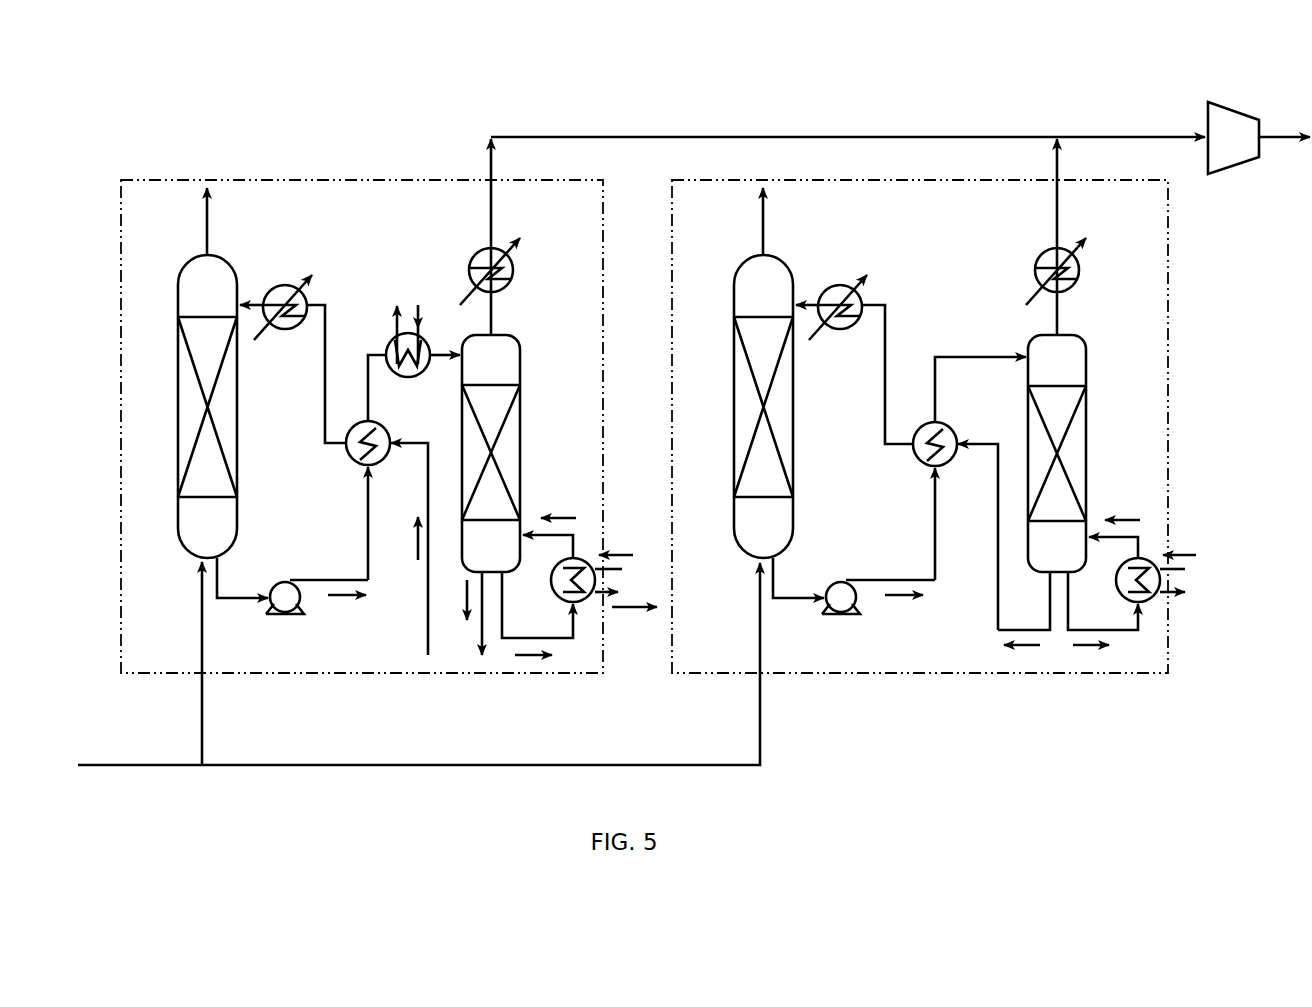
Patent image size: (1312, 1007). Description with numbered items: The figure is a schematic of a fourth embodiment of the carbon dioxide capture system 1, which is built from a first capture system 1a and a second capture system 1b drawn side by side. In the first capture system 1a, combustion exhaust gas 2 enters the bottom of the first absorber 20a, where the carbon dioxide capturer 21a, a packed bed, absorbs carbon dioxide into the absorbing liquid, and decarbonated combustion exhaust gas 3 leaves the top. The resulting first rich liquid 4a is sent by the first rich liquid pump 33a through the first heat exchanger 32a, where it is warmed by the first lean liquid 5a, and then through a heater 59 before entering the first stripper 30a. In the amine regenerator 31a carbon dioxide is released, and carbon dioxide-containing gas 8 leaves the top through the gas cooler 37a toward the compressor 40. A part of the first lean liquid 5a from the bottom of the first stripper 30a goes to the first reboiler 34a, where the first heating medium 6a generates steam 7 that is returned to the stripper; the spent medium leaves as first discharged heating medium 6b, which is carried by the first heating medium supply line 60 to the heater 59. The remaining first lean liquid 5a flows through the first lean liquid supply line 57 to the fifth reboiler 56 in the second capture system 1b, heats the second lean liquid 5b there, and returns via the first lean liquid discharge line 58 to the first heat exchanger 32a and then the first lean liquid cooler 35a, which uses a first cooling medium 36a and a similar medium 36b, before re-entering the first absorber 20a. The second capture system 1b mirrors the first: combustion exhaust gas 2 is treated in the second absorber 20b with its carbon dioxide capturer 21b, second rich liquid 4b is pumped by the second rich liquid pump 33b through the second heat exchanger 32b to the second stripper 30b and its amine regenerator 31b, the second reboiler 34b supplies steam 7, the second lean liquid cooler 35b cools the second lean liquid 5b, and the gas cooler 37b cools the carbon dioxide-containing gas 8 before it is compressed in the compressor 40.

The carbon dioxide capture system 1 is at (92, 131).
The first capture system 1a is at (117, 476).
The second capture system 1b is at (1172, 322).
The combustion exhaust gas 2 is at (150, 748).
The decarbonated combustion exhaust gas 3 is at (188, 208).
The first rich liquid 4a is at (346, 604).
The second rich liquid 4b is at (900, 604).
The first lean liquid 5a is at (416, 543).
The second lean liquid 5b is at (1025, 648).
The first heating medium 6a is at (616, 553).
The first discharged heating medium 6b is at (436, 303).
The steam 7 is at (563, 516).
The carbon dioxide-containing gas 8 is at (1120, 125).
The first absorber 20a is at (176, 309).
The second absorber 20b is at (732, 309).
The carbon dioxide capturer 21a is at (182, 412).
The carbon dioxide capturer 21b is at (738, 412).
The first stripper 30a is at (530, 336).
The second stripper 30b is at (1020, 338).
The amine regenerator 31a is at (514, 441).
The amine regenerator 31b is at (1078, 442).
The first heat exchanger 32a is at (356, 460).
The second heat exchanger 32b is at (923, 460).
The first rich liquid pump 33a is at (283, 614).
The second rich liquid pump 33b is at (838, 614).
The first reboiler 34a is at (555, 596).
The second reboiler 34b is at (1137, 569).
The first lean liquid cooler 35a is at (285, 285).
The second lean liquid cooler 35b is at (840, 285).
The first cooling medium 36a is at (277, 338).
The heating medium line of second condenser 36b is at (833, 338).
The gas cooler 37a is at (474, 255).
The gas cooler 37b is at (1040, 255).
The compressor 40 is at (1233, 101).
The fifth reboiler 56 is at (1120, 592).
The first lean liquid supply line 57 is at (480, 628).
The first lean liquid discharge line 58 is at (427, 628).
The heater 59 is at (394, 345).
The first heating medium supply line 60 is at (418, 312).